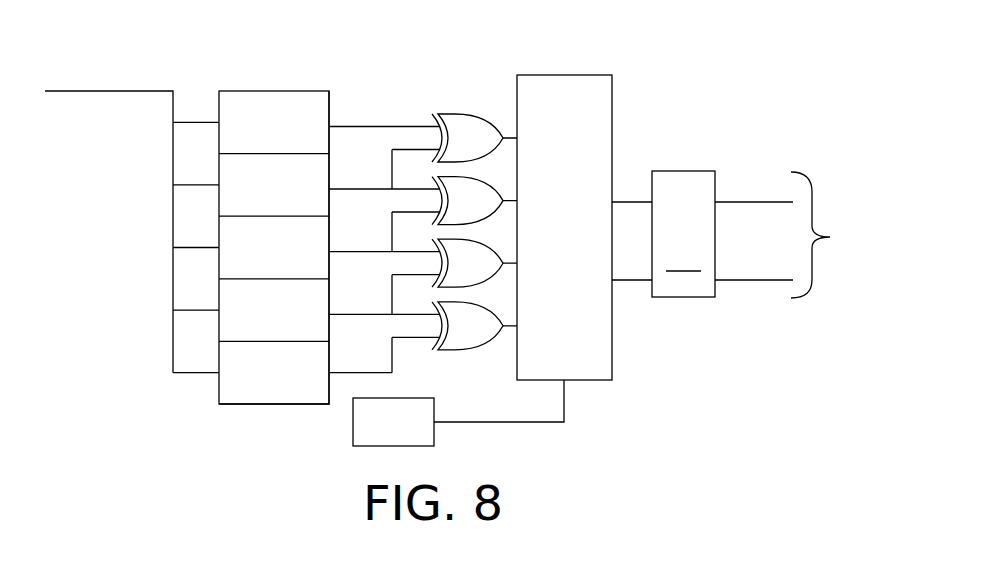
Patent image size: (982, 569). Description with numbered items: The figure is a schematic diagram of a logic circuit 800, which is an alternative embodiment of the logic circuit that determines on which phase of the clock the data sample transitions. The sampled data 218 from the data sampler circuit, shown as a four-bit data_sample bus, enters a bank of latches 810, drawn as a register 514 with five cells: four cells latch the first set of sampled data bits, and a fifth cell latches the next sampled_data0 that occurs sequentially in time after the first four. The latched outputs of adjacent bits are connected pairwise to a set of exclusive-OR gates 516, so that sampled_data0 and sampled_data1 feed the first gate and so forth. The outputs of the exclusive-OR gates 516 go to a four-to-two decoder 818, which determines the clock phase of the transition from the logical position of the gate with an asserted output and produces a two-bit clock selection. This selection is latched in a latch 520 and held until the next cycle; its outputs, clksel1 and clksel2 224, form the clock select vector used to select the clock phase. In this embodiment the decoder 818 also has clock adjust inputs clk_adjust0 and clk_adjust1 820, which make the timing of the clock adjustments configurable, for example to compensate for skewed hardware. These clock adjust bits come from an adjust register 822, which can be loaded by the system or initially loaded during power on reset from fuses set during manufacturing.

The sampled data 218 is at (92, 94).
The bank of latches 810 is at (250, 57).
The register 514 is at (247, 405).
The logic circuit 800 is at (616, 38).
The exclusive-OR gates 516 is at (445, 86).
The decoder 818 is at (547, 310).
The latch 520 is at (639, 124).
The clksel1 and clksel2 224 is at (802, 235).
The adjust register 822 is at (353, 422).
The clock adjust inputs 820 is at (553, 426).